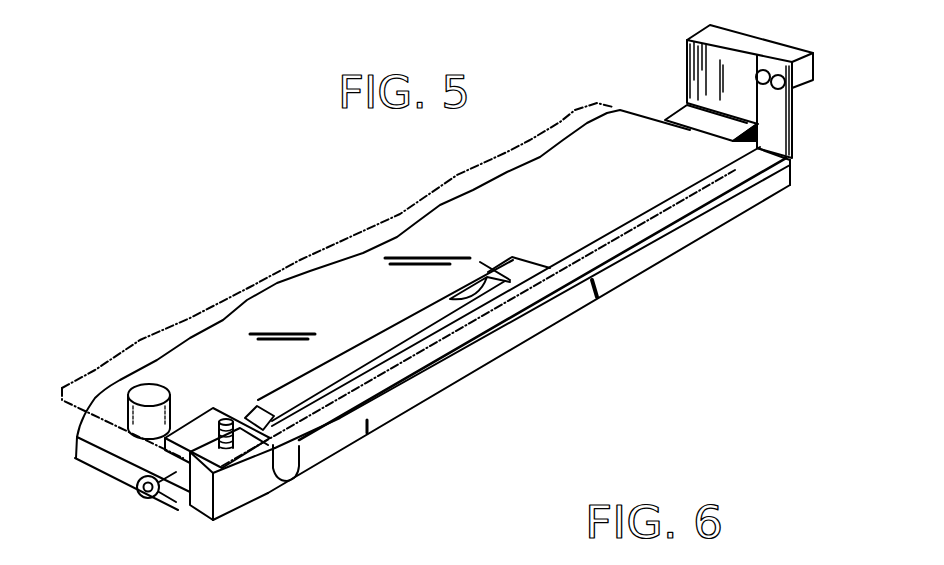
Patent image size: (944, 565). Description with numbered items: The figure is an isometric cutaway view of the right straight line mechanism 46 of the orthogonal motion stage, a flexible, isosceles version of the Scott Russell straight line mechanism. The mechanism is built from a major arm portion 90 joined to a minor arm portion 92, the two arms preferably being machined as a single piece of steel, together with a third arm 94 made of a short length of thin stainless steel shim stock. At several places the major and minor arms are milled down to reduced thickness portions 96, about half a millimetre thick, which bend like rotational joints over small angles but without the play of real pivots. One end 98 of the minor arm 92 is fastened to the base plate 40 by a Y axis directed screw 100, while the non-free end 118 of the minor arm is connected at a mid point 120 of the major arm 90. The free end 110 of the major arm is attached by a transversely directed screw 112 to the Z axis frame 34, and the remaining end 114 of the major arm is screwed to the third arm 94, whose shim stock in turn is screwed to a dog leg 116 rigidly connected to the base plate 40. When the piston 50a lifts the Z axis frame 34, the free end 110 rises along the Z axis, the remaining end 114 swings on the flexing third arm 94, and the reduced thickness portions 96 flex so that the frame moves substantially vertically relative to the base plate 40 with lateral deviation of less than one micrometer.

In FIG. 5, the Z axis frame 34 is at (531, 140).
In FIG. 5, the base plate 40 is at (640, 180).
In FIG. 5, the right straight line mechanism 46 is at (690, 282).
In FIG. 5, the piston 50a is at (152, 388).
In FIG. 5, the major arm portion 90 is at (707, 230).
In FIG. 6, the major arm portion 90 is at (495, 564).
In FIG. 5, the minor arm portion 92 is at (346, 357).
In FIG. 5, the third arm 94 is at (790, 117).
In FIG. 5, the reduced thickness portions 96 is at (488, 283).
In FIG. 5, the end of the minor arm 98 is at (200, 420).
In FIG. 5, the Y axis directed screw 100 is at (152, 497).
In FIG. 5, the free end of the major arm 110 is at (227, 507).
In FIG. 5, the transversely directed screw 112 is at (237, 447).
In FIG. 5, the remaining end of the major arm 114 is at (778, 186).
In FIG. 6, the remaining end of the major arm 114 is at (778, 564).
In FIG. 5, the dog leg 116 is at (773, 47).
In FIG. 5, the non-free end of the minor arm 118 is at (515, 272).
In FIG. 5, the mid point of the major arm 120 is at (553, 290).